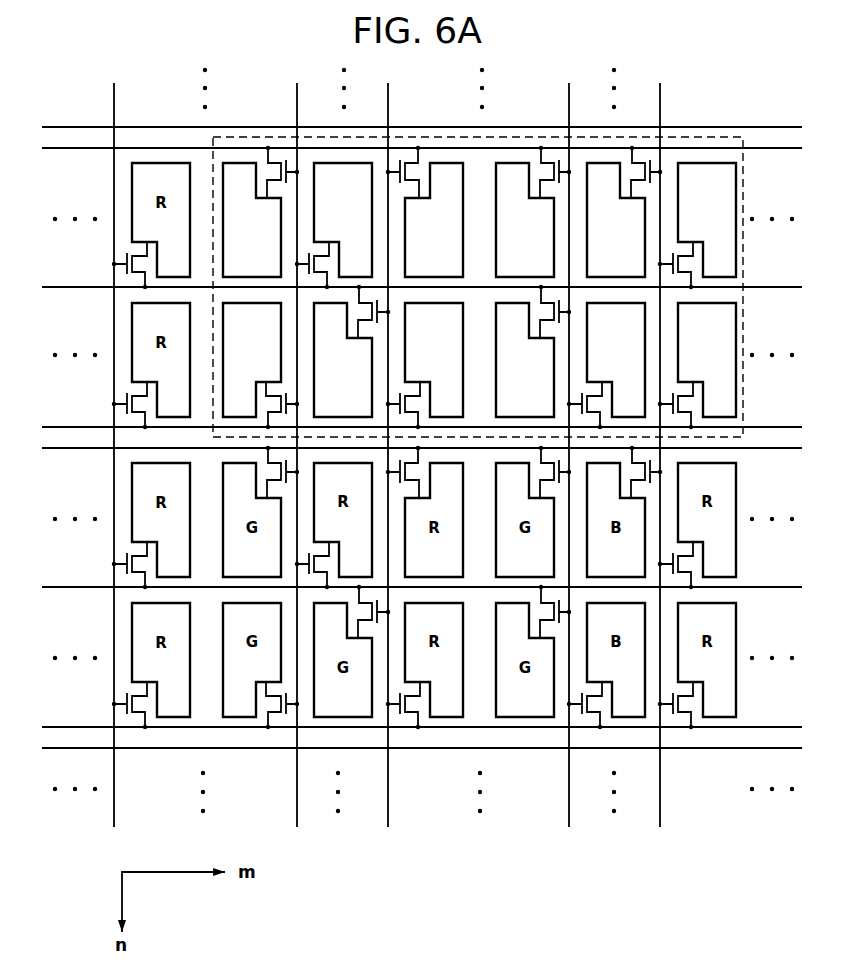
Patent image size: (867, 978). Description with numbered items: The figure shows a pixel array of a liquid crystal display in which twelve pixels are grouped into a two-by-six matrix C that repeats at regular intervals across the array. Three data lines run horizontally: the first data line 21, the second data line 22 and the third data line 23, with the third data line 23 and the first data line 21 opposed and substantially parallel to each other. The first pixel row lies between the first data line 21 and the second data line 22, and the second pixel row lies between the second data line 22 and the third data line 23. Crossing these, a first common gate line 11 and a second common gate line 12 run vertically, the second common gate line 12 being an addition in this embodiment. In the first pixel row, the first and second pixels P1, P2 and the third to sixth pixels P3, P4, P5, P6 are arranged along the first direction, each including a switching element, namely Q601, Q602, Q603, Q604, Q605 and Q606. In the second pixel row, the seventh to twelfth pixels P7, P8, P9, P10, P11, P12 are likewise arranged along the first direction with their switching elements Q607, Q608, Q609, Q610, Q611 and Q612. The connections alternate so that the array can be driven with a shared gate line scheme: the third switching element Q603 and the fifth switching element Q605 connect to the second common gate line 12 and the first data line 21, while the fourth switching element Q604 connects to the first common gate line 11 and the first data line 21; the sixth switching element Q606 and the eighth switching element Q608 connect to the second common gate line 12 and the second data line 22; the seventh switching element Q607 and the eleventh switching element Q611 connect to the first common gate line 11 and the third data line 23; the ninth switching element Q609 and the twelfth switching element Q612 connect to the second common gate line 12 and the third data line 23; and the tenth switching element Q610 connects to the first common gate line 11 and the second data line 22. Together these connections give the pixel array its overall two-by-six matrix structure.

The first common gate line 11 is at (434, 445).
The second common gate line 12 is at (387, 445).
The first data line 21 is at (410, 448).
The second data line 22 is at (410, 437).
The third data line 23 is at (410, 427).
The 2×6 matrix portion C is at (713, 137).
The first switching element Q601 is at (268, 172).
The second switching element Q602 is at (313, 266).
The third switching element Q603 is at (420, 172).
The fourth switching element Q604 is at (541, 172).
The fifth switching element Q605 is at (632, 172).
The sixth switching element Q606 is at (676, 266).
The seventh switching element Q607 is at (284, 406).
The eighth switching element Q608 is at (361, 311).
The ninth switching element Q609 is at (404, 406).
The tenth switching element Q610 is at (541, 311).
The eleventh switching element Q611 is at (585, 406).
The twelfth switching element Q612 is at (676, 406).
The first pixel P1 is at (252, 220).
The second pixel P2 is at (343, 220).
The third pixel P3 is at (434, 220).
The fourth pixel P4 is at (525, 220).
The fifth pixel P5 is at (616, 220).
The sixth pixel P6 is at (707, 220).
The seventh pixel P7 is at (252, 360).
The eighth pixel P8 is at (343, 360).
The ninth pixel P9 is at (434, 360).
The tenth pixel P10 is at (525, 360).
The eleventh pixel P11 is at (616, 360).
The twelfth pixel P12 is at (707, 360).